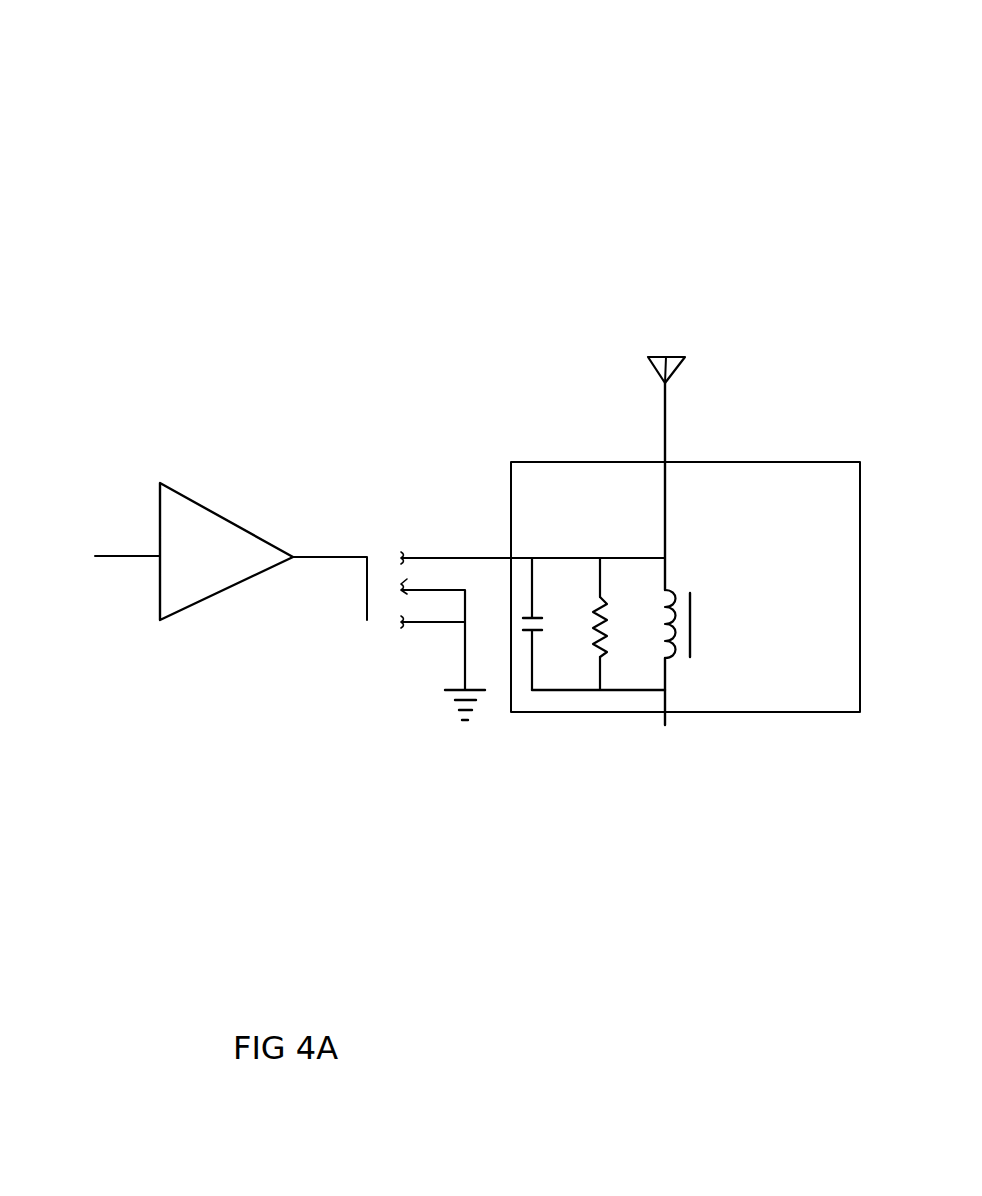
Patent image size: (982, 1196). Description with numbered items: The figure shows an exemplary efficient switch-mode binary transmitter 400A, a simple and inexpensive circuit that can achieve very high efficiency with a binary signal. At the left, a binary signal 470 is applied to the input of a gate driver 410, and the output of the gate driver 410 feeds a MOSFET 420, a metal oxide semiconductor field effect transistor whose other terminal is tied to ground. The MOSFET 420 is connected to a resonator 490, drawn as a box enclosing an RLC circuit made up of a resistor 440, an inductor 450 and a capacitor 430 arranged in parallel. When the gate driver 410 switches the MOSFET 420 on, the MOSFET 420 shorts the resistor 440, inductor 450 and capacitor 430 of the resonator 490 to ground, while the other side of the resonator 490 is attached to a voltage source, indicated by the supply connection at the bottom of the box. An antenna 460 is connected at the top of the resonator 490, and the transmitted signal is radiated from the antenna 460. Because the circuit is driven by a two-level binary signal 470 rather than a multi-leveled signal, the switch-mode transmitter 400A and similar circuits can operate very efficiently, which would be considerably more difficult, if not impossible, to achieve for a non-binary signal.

The efficient switch-mode transmitter 400A is at (340, 47).
The gate driver 410 is at (236, 503).
The MOSFET 420 is at (422, 540).
The capacitor 430 is at (546, 579).
The resistor 440 is at (617, 575).
The inductor 450 is at (683, 582).
The antenna 460 is at (650, 413).
The binary signal 470 is at (62, 530).
The resonator 490 is at (753, 458).